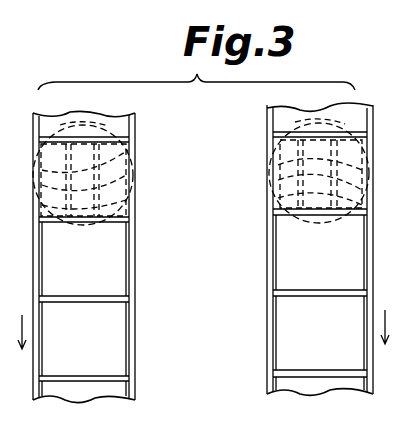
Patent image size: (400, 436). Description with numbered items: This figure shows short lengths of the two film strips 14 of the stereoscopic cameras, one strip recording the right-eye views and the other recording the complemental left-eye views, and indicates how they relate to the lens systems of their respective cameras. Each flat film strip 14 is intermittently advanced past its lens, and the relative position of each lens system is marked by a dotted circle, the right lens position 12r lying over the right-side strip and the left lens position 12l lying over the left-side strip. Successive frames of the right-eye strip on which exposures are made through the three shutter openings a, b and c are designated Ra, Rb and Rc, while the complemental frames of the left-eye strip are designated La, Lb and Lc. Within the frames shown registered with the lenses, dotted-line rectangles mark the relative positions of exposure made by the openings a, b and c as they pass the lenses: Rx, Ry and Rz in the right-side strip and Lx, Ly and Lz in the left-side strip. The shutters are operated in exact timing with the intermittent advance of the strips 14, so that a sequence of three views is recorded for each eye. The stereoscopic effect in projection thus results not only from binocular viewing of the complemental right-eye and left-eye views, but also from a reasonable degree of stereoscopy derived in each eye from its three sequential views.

The film strip 14 is at (46, 116).
The left lens system position 12l is at (102, 128).
The right lens system position 12r is at (293, 133).
The left exposure rectangle for opening c Lz is at (110, 162).
The left exposure rectangle for opening b Ly is at (85, 181).
The left exposure rectangle for opening a Lx is at (115, 203).
The left-eye frame exposed through opening c Lc is at (105, 261).
The left-eye frame exposed through opening b Lb is at (110, 320).
The left-eye frame exposed through opening a La is at (112, 393).
The right exposure rectangle for opening c Rz is at (284, 153).
The right exposure rectangle for opening b Ry is at (278, 178).
The right exposure rectangle for opening a Rx is at (282, 204).
The right-eye frame exposed through opening c Rc is at (293, 260).
The right-eye frame exposed through opening b Rb is at (285, 317).
The right-eye frame exposed through opening a Ra is at (297, 382).